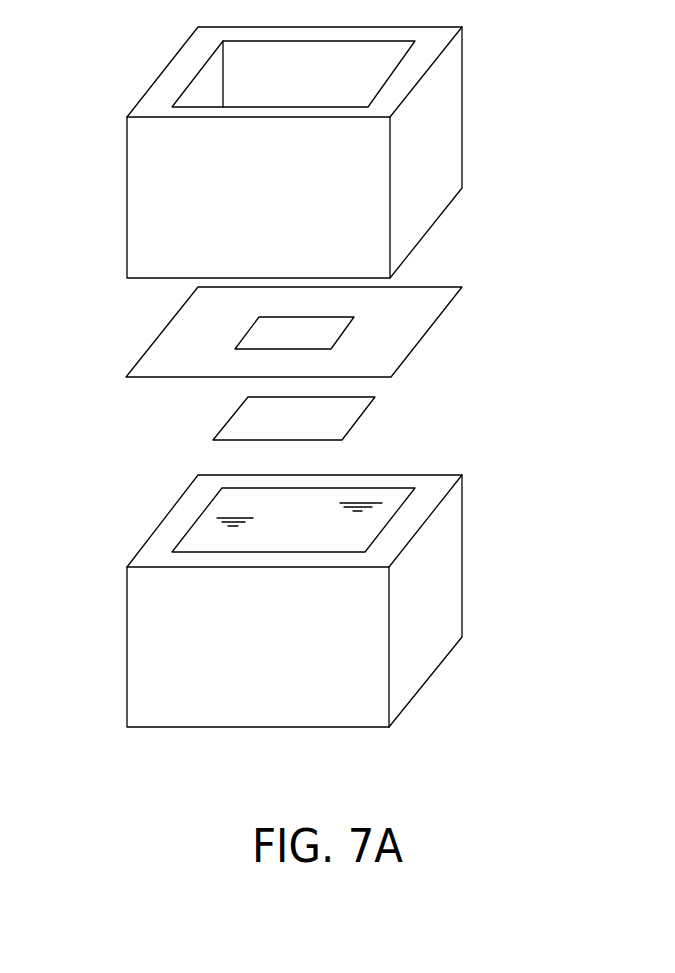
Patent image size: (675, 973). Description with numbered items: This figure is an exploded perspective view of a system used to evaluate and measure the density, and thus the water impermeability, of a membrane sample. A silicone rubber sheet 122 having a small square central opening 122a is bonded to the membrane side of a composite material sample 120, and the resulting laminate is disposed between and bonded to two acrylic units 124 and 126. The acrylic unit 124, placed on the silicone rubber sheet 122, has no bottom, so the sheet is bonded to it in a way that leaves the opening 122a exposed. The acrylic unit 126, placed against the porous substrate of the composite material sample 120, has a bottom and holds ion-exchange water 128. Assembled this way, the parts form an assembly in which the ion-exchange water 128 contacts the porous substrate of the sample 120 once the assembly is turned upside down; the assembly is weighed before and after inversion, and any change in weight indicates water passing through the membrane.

The composite material sample 120 is at (359, 417).
The silicone rubber sheet 122 is at (428, 335).
The central opening 122a is at (293, 327).
The acrylic unit 124 is at (438, 148).
The acrylic unit 126 is at (452, 573).
The ion-exchange water 128 is at (297, 520).